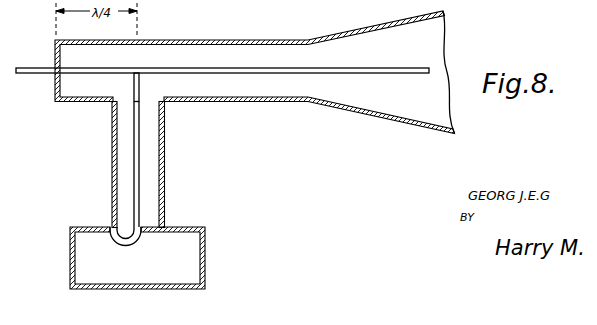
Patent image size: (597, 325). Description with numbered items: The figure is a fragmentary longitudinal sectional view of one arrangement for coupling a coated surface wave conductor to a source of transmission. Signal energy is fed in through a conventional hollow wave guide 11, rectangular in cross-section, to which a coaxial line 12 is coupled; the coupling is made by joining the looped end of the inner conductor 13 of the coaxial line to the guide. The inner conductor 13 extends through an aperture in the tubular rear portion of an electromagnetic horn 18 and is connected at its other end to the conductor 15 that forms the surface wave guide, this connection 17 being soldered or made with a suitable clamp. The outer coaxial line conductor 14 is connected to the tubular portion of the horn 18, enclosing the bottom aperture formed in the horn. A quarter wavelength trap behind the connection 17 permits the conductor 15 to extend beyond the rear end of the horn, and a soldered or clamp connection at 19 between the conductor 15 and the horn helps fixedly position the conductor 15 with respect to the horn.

The hollow wave guide 11 is at (205, 270).
The coaxial line 12 is at (179, 159).
The inner conductor 13 is at (134, 170).
The outer coaxial line conductor 14 is at (112, 147).
The conductor 15 is at (217, 68).
The connection 17 is at (132, 77).
The electromagnetic horn 18 is at (202, 40).
The soldered or clamp connection 19 is at (55, 68).